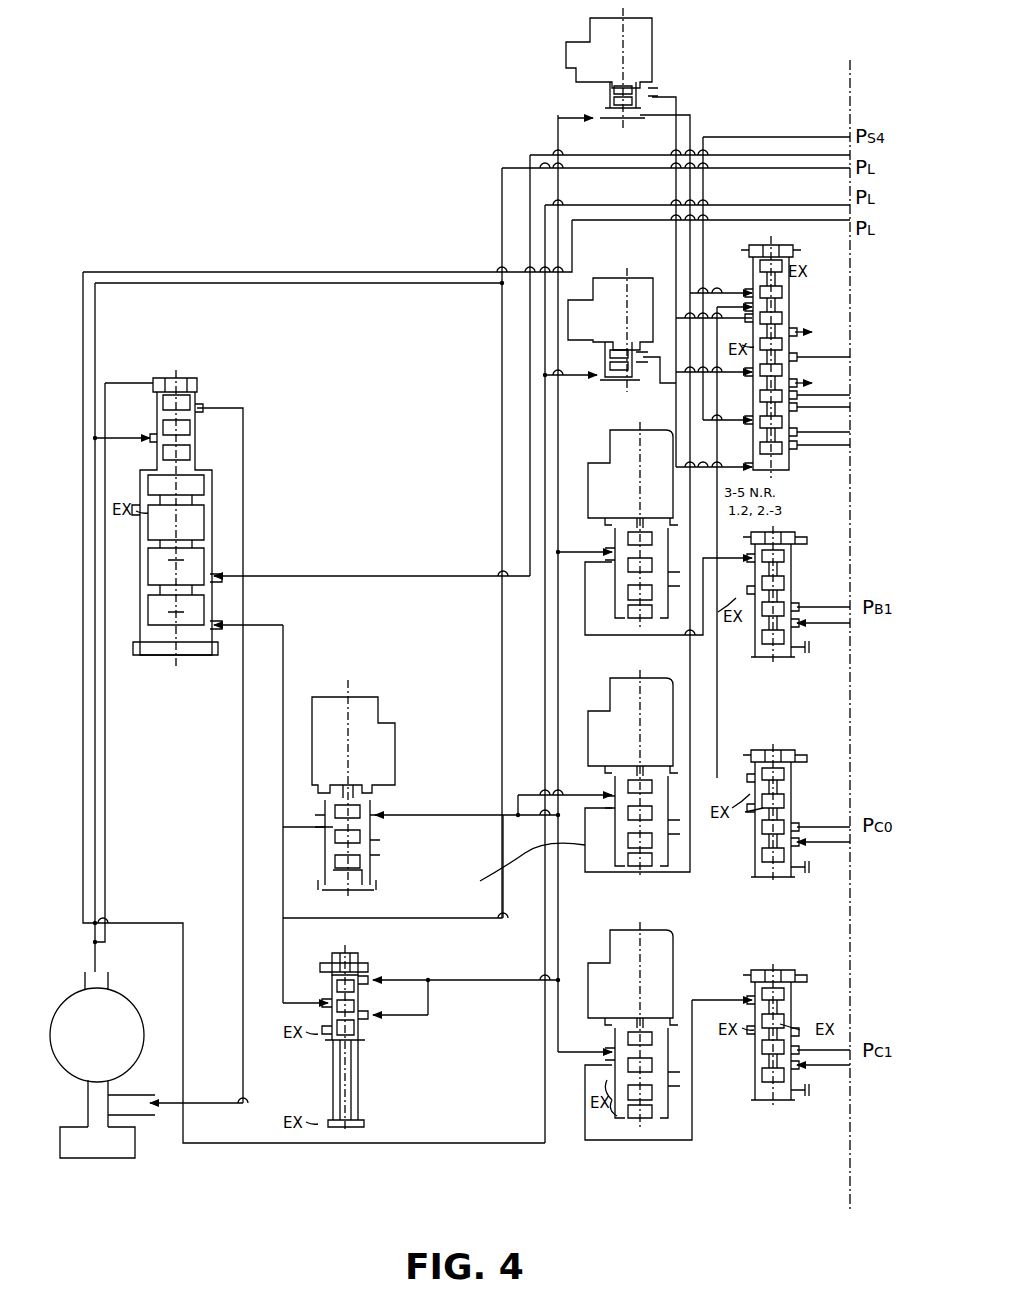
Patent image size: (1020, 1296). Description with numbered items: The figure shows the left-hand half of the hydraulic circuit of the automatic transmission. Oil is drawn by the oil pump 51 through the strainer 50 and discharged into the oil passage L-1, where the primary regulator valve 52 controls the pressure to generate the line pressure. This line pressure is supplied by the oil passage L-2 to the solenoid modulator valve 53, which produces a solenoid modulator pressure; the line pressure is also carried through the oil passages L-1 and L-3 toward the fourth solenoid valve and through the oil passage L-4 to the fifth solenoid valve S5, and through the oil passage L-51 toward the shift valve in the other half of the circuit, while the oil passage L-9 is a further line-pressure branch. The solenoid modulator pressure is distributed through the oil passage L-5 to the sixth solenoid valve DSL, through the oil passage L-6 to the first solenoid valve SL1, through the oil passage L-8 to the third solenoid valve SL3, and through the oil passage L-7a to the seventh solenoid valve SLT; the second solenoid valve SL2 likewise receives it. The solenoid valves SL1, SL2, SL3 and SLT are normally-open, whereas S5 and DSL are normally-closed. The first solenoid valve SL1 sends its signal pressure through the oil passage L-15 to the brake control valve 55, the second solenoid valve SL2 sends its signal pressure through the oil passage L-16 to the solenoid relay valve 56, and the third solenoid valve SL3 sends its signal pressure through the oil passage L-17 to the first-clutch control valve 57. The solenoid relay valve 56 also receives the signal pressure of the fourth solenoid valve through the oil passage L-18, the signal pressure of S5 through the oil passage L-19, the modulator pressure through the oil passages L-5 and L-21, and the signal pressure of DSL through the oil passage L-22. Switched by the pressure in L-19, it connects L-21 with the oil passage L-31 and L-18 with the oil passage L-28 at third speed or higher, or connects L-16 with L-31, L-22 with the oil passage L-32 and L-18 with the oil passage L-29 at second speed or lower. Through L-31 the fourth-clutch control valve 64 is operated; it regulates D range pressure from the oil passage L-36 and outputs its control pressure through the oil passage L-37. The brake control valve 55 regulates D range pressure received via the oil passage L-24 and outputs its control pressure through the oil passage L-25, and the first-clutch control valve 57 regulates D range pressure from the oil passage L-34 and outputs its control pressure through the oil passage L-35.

The strainer 50 is at (134, 1158).
The oil pump 51 is at (127, 998).
The primary regulator valve 52 is at (180, 376).
The solenoid modulator valve 53 is at (370, 957).
The B-1 control valve 55 is at (792, 532).
The solenoid relay valve 56 is at (783, 242).
The C-1 control valve 57 is at (765, 968).
The C-0 control valve 64 is at (779, 744).
The sixth solenoid valve DSL is at (590, 68).
The fifth solenoid valve S5 is at (610, 274).
The first solenoid valve SL1 is at (602, 434).
The second solenoid valve SL2 is at (632, 762).
The third solenoid valve SL3 is at (634, 1011).
The seventh solenoid valve SLT is at (370, 688).
The oil passage L-1 is at (96, 308).
The oil passage L-2 is at (528, 393).
The oil passage L-3 is at (543, 462).
The oil passage L-4 is at (540, 375).
The oil passage L-5 is at (556, 126).
The oil passage L-6 is at (558, 552).
The oil passage L-7a is at (582, 787).
The oil passage L-8 is at (576, 1052).
The oil passage L-9 is at (798, 170).
The oil passage L-15 is at (585, 592).
The oil passage L-16 is at (511, 870).
The oil passage L-17 is at (692, 1121).
The oil passage L-18 is at (746, 136).
The oil passage L-19 is at (678, 398).
The oil passage L-21 is at (664, 128).
The oil passage L-22 is at (654, 96).
The oil passage L-24 is at (824, 624).
The oil passage L-25 is at (824, 600).
The oil passage L-28 is at (810, 446).
The oil passage L-29 is at (808, 408).
The oil passage L-31 is at (720, 304).
The oil passage L-32 is at (822, 356).
The oil passage L-34 is at (826, 1067).
The oil passage L-35 is at (832, 1048).
The oil passage L-36 is at (826, 844).
The oil passage L-37 is at (826, 818).
The oil passage L-51 is at (82, 805).